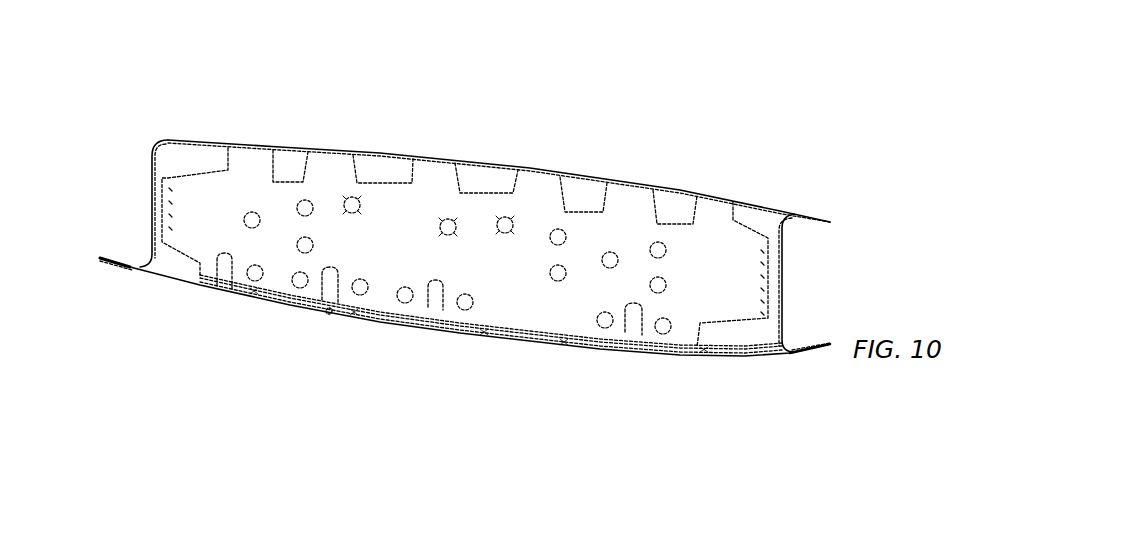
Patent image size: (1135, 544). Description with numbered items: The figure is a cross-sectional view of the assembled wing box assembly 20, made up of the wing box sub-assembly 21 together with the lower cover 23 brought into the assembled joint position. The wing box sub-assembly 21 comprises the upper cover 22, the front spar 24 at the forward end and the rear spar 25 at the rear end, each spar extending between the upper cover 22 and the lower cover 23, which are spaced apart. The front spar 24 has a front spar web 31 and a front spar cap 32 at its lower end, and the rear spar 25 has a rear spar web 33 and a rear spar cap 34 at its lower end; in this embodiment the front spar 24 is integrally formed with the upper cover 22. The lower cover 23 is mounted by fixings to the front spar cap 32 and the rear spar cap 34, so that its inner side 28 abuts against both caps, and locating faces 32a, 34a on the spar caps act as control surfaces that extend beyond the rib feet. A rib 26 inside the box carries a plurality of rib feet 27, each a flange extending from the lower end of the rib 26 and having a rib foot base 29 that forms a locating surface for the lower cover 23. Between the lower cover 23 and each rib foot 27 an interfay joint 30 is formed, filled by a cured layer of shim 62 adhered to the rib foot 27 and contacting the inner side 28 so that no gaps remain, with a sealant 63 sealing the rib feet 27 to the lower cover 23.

The wing box assembly 20 is at (605, 152).
The wing box sub-assembly 21 is at (737, 153).
The upper cover 22 is at (280, 147).
The lower cover 23 is at (404, 323).
The front spar 24 is at (152, 187).
The rear spar 25 is at (777, 273).
The rib 26 is at (385, 200).
The rib feet 27 is at (243, 293).
The inner side 28 is at (332, 312).
The rib foot base 29 is at (465, 330).
The interfay joint 30 is at (603, 347).
The front spar web 31 is at (152, 227).
The front spar cap 32 is at (117, 267).
The locating face 32a is at (130, 270).
The rear spar web 33 is at (777, 313).
The rear spar cap 34 is at (795, 351).
The locating face 34a is at (805, 351).
The cured layer of shim 62 is at (515, 337).
The sealant 63 is at (558, 340).